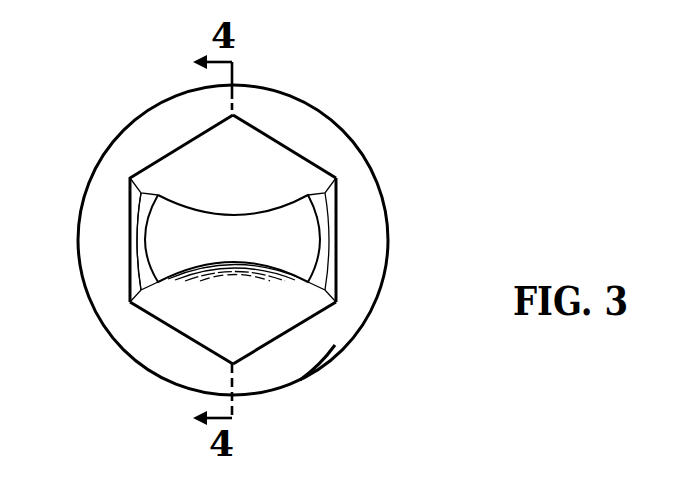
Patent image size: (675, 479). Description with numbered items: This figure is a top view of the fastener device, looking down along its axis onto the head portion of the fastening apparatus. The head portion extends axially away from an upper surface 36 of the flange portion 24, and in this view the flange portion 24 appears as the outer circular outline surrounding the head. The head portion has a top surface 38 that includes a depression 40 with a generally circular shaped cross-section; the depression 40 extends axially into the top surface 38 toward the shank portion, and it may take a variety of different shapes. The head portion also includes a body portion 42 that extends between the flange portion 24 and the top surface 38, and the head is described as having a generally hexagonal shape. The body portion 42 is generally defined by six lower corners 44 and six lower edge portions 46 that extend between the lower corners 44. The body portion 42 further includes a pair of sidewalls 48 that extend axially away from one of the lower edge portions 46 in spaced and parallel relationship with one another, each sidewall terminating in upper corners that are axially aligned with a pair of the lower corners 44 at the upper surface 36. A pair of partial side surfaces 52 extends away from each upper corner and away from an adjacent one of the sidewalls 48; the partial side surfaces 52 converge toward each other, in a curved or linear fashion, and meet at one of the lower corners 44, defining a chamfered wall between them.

The flange portion 24 is at (318, 108).
The upper surface 36 is at (322, 357).
The top surface 38 is at (135, 247).
The depression 40 is at (308, 232).
The body portion 42 is at (127, 192).
The lower corners 44 is at (110, 320).
The lower edge portions 46 is at (245, 117).
The sidewalls 48 is at (127, 205).
The partial side surfaces 52 is at (193, 340).